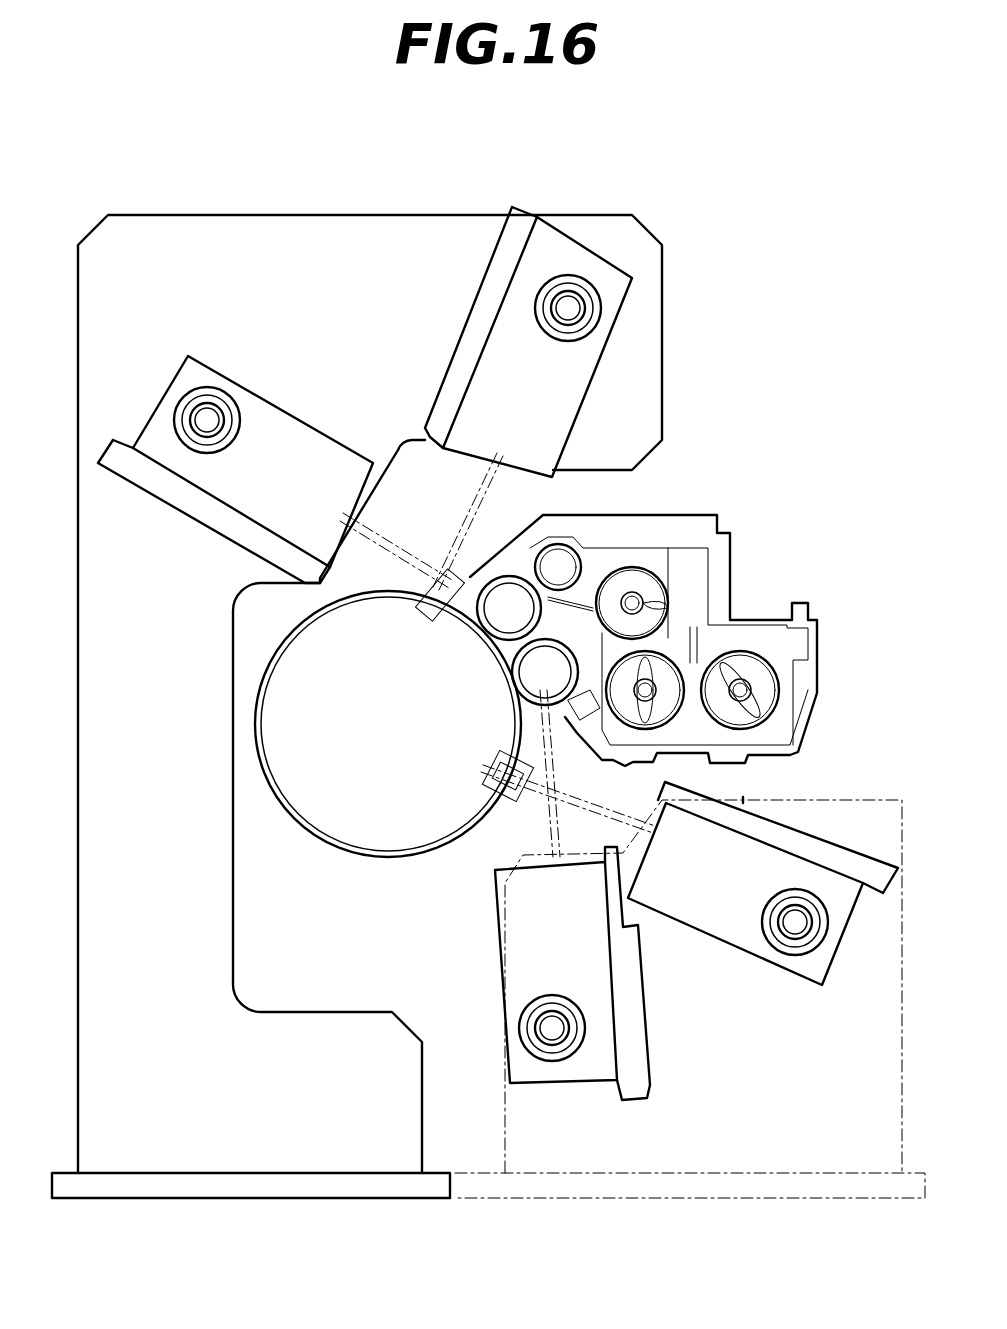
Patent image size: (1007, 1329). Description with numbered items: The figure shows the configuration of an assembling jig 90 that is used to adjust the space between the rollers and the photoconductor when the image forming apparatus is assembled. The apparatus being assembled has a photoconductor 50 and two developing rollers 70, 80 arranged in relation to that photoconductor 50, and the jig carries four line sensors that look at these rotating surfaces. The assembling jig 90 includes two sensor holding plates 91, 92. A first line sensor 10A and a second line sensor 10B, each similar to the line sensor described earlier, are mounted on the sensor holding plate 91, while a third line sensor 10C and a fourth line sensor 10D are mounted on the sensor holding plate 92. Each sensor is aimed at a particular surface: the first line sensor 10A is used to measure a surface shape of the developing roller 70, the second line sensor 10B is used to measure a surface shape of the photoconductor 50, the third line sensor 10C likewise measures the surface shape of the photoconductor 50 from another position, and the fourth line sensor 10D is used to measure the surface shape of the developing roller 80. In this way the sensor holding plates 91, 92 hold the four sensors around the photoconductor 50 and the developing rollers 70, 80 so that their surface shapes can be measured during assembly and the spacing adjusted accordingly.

The assembling jig 90 is at (120, 165).
The sensor holding plate 91 is at (317, 227).
The sensor holding plate 92 is at (877, 795).
The photoconductor 50 is at (340, 850).
The developing roller 70 is at (506, 618).
The developing roller 80 is at (528, 676).
The first line sensor 10A is at (268, 402).
The second line sensor 10B is at (570, 255).
The third line sensor 10C is at (785, 967).
The fourth line sensor 10D is at (497, 940).